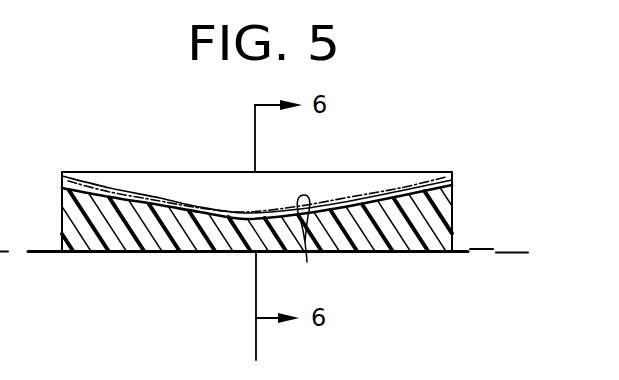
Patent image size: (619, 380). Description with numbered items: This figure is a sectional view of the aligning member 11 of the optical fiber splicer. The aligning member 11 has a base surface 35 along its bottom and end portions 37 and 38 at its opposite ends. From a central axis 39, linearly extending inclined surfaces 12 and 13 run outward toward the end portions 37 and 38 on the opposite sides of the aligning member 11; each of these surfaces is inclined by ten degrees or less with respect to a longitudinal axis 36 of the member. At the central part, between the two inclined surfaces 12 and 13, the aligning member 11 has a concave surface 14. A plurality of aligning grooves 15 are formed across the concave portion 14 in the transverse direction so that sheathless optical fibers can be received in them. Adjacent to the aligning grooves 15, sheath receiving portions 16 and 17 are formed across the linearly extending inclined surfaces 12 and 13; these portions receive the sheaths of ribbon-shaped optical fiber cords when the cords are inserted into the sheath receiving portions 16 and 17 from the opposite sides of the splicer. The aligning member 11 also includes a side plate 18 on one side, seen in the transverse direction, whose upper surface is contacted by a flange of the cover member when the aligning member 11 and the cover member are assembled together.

The aligning member 11 is at (499, 234).
The linearly extending inclined surface 12 is at (160, 201).
The linearly extending inclined surface 13 is at (357, 202).
The concave surface 14 is at (307, 262).
The aligning grooves 15 is at (227, 222).
The sheath receiving portion 16 is at (118, 197).
The sheath receiving portion 17 is at (413, 192).
The side plate 18 is at (100, 181).
The base surface 35 is at (98, 253).
The longitudinal axis 36 is at (457, 253).
The end portion 37 is at (62, 221).
The end portion 38 is at (453, 200).
The central axis 39 is at (256, 338).